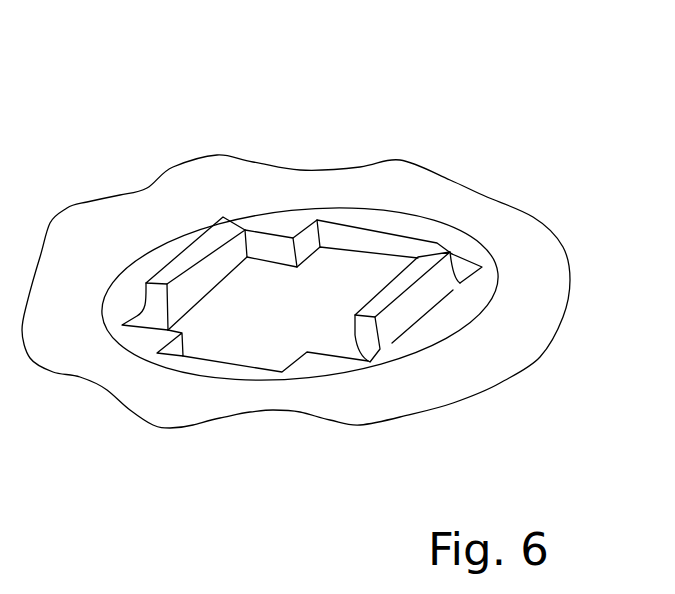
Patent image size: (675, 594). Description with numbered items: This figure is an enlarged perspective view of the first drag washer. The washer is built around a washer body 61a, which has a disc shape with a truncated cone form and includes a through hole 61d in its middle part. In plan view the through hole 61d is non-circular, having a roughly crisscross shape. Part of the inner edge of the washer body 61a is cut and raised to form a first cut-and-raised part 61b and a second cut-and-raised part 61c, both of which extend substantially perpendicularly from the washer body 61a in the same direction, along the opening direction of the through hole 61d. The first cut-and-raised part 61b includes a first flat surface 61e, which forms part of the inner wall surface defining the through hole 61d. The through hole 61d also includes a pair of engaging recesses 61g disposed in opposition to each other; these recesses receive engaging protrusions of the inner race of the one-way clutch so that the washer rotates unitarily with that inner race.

The washer body 61a is at (540, 287).
The engaging recess 61g is at (355, 236).
The first cut-and-raised part 61b is at (200, 236).
The second cut-and-raised part 61c is at (433, 260).
The first flat surface 61e is at (231, 250).
The through hole 61d is at (231, 342).